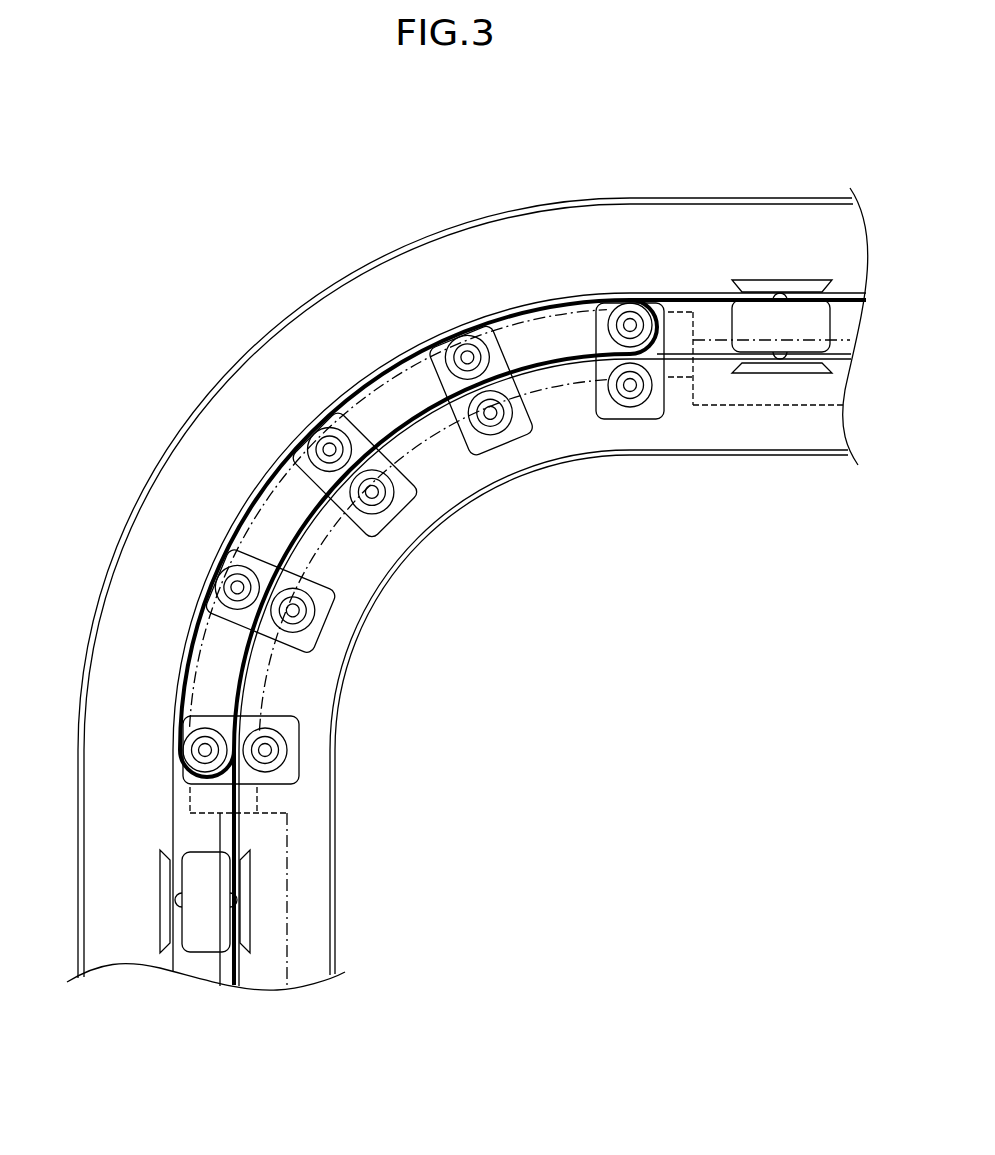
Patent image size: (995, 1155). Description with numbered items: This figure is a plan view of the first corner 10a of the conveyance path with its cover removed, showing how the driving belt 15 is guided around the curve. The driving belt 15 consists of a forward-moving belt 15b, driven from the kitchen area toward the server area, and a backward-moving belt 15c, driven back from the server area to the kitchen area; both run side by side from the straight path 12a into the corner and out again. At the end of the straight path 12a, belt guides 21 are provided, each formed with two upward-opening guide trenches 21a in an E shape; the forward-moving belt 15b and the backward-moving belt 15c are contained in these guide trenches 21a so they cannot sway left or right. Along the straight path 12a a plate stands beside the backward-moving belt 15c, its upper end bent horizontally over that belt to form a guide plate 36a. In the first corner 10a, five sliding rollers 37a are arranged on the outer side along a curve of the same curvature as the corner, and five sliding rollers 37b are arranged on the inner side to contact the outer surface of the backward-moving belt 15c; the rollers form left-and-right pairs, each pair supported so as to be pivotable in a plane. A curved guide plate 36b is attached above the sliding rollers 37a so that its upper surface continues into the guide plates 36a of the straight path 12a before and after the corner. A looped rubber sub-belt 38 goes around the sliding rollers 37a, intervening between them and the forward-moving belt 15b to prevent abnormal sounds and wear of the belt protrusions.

The first corner 10a is at (276, 312).
The straight path 12a is at (773, 188).
The driving belt 15 is at (253, 1068).
The forward-moving belt 15b is at (178, 973).
The backward-moving belt 15c is at (237, 987).
The belt guide 21 is at (817, 325).
The guide trench 21a is at (777, 297).
The guide plate 36a is at (727, 408).
The guide plate 36b is at (430, 442).
The sliding roller 37a is at (460, 326).
The sliding roller 37b is at (503, 447).
The sub-belt 38 is at (238, 660).